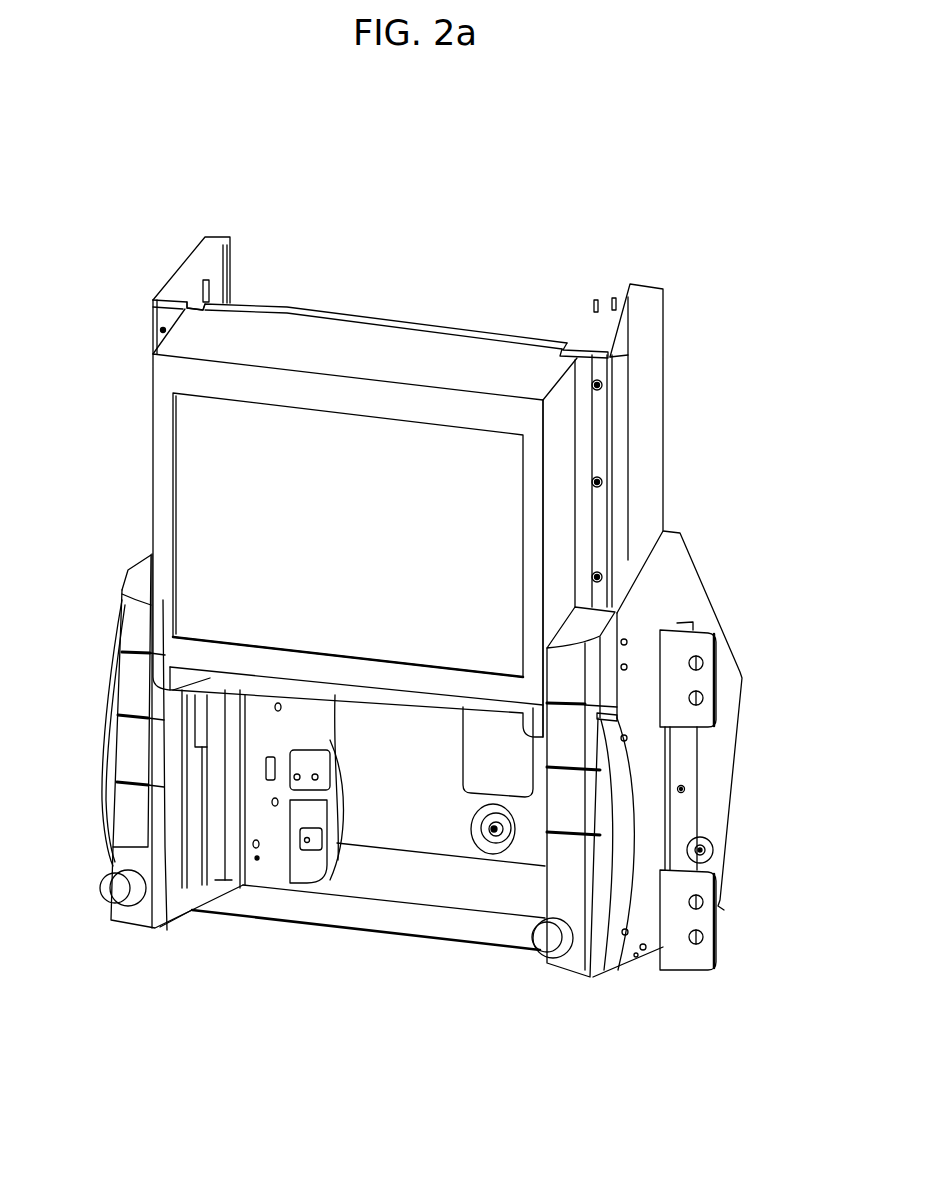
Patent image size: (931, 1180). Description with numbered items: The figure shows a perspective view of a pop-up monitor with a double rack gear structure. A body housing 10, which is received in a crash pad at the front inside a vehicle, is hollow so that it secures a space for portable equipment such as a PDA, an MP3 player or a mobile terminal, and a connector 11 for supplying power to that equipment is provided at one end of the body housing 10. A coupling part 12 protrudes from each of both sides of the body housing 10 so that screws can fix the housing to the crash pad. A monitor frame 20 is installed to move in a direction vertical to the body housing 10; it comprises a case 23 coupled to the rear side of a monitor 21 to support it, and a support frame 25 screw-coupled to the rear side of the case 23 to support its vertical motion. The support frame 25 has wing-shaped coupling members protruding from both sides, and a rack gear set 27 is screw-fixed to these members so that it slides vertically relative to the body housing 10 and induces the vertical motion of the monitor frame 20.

The body housing 10 is at (453, 768).
The connector 11 is at (493, 830).
The coupling part 12 is at (716, 683).
The monitor frame 20 is at (394, 459).
The monitor 21 is at (198, 460).
The case 23 is at (165, 380).
The support frame 25 is at (357, 317).
The rack gear set 27 is at (193, 265).